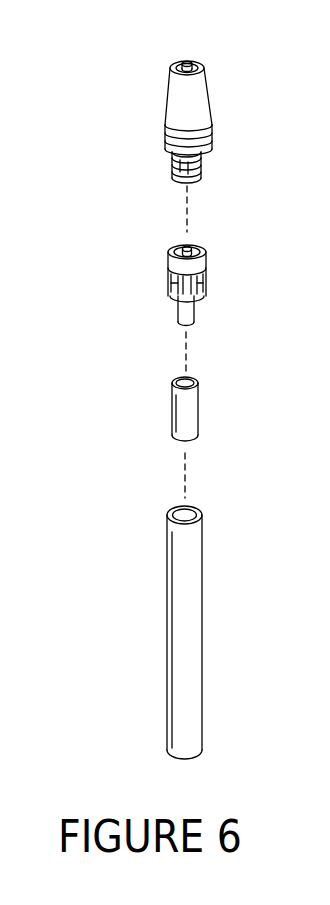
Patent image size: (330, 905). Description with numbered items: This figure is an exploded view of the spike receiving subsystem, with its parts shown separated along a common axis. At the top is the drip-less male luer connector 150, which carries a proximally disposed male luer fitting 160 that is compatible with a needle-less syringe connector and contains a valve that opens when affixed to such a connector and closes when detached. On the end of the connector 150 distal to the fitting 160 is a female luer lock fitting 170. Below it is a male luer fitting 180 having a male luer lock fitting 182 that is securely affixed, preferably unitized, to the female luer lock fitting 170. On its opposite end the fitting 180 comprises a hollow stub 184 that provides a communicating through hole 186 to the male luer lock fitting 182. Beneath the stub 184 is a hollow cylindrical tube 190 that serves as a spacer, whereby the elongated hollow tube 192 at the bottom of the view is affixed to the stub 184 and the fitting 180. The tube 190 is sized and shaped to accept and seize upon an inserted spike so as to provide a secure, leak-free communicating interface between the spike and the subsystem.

The drip-less male luer connector 150 is at (170, 77).
The male luer fitting 160 is at (195, 56).
The female luer lock fitting 170 is at (168, 160).
The male luer fitting 180 is at (206, 275).
The male luer lock fitting 182 is at (197, 248).
The hollow stub 184 is at (177, 320).
The communicating through hole 186 is at (183, 247).
The hollow cylindrical tube 190 is at (200, 416).
The elongated hollow tube 192 is at (202, 589).